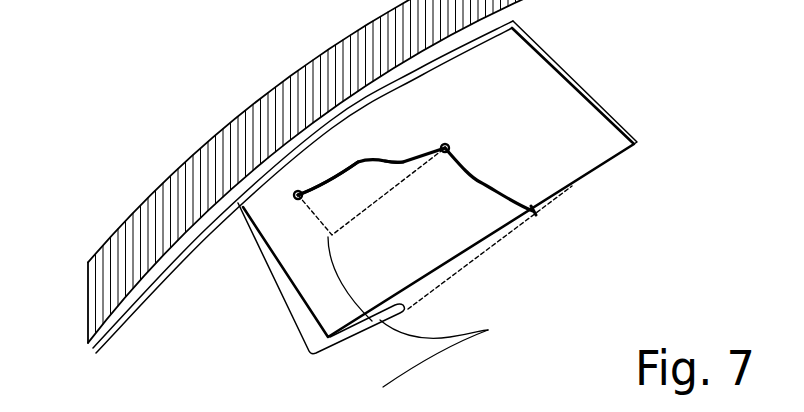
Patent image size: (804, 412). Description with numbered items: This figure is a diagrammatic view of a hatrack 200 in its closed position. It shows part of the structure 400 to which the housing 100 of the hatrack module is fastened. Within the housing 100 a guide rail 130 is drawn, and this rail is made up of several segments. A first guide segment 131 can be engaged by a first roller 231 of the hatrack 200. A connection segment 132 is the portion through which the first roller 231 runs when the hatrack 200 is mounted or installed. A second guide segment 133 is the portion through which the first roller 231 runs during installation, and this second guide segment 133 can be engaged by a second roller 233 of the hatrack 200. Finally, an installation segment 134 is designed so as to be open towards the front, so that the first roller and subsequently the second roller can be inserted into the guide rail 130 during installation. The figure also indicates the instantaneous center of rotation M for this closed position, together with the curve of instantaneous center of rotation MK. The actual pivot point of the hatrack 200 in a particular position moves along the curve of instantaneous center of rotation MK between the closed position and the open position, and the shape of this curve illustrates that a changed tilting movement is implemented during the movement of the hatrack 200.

The structure 400 is at (170, 160).
The housing 100 is at (264, 309).
The hatrack 200 is at (566, 191).
The guide rail 130 is at (375, 159).
The first guide segment 131 is at (326, 182).
The connection segment 132 is at (403, 164).
The second guide segment 133 is at (478, 178).
The installation segment 134 is at (524, 203).
The first roller 231 is at (294, 200).
The second roller 233 is at (447, 146).
The instantaneous center of rotation M is at (328, 235).
The curve of instantaneous center of rotation MK is at (443, 355).